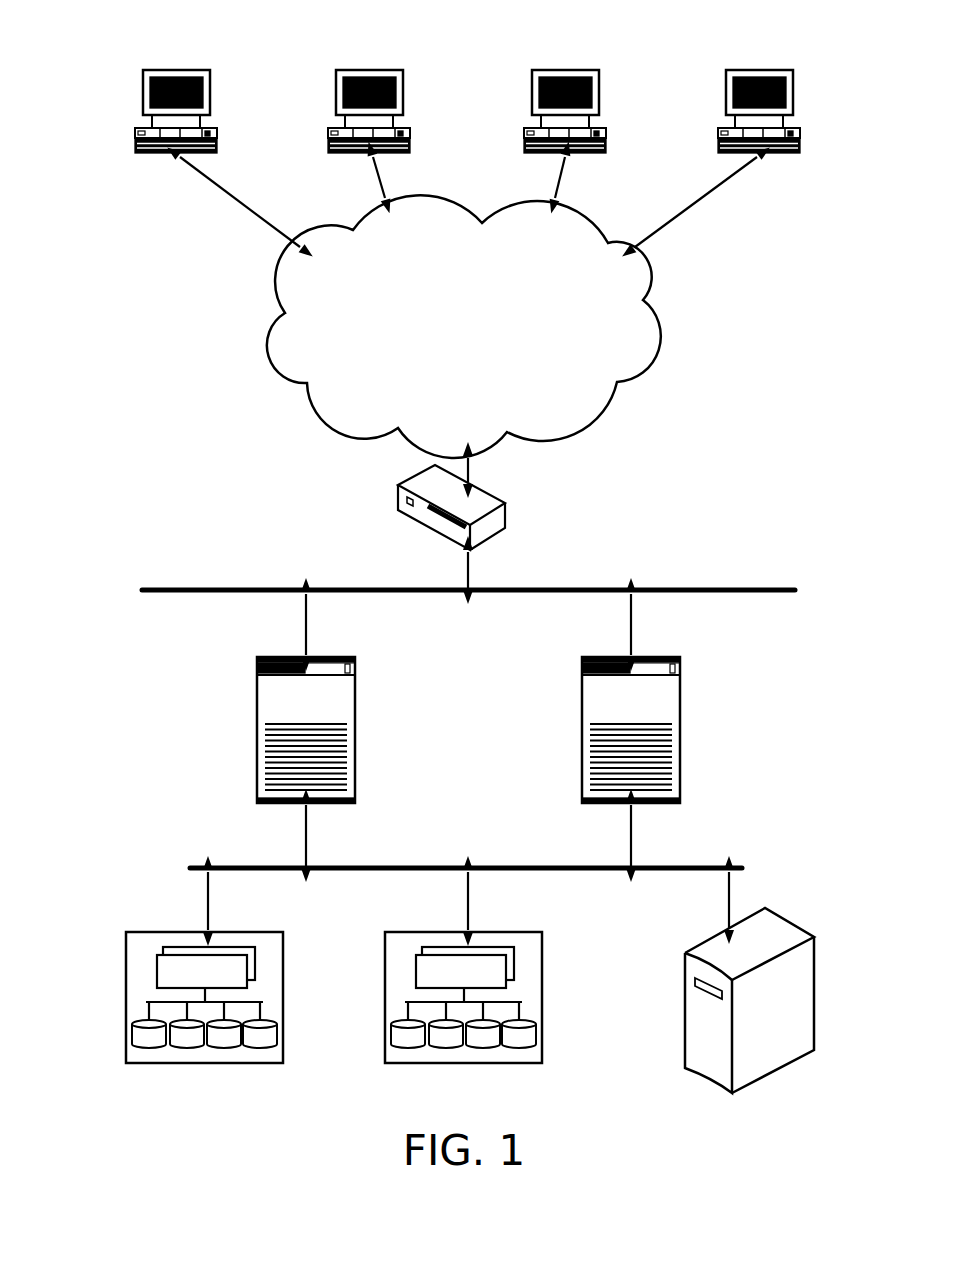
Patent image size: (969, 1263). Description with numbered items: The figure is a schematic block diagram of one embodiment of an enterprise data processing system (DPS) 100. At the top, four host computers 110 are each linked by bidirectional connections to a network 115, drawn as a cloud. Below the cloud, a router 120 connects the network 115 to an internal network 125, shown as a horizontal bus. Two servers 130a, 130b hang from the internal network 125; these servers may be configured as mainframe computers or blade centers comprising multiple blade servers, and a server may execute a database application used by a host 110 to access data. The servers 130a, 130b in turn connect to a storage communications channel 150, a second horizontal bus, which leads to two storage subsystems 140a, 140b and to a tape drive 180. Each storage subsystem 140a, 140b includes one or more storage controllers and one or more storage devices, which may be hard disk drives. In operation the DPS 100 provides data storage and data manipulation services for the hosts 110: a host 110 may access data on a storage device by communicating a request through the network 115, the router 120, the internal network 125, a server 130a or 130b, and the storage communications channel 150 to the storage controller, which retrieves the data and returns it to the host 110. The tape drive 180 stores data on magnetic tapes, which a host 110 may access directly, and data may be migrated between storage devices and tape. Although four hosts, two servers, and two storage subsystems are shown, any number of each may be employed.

The enterprise data processing system 100 is at (108, 52).
The host computer 110 is at (210, 70).
The network 115 is at (464, 326).
The router 120 is at (505, 503).
The internal network 125 is at (161, 589).
The server 130a is at (355, 657).
The server 130b is at (680, 657).
The storage subsystem 140a is at (211, 978).
The storage subsystem 140b is at (473, 978).
The storage communications channel 150 is at (401, 867).
The tape drive 180 is at (815, 965).